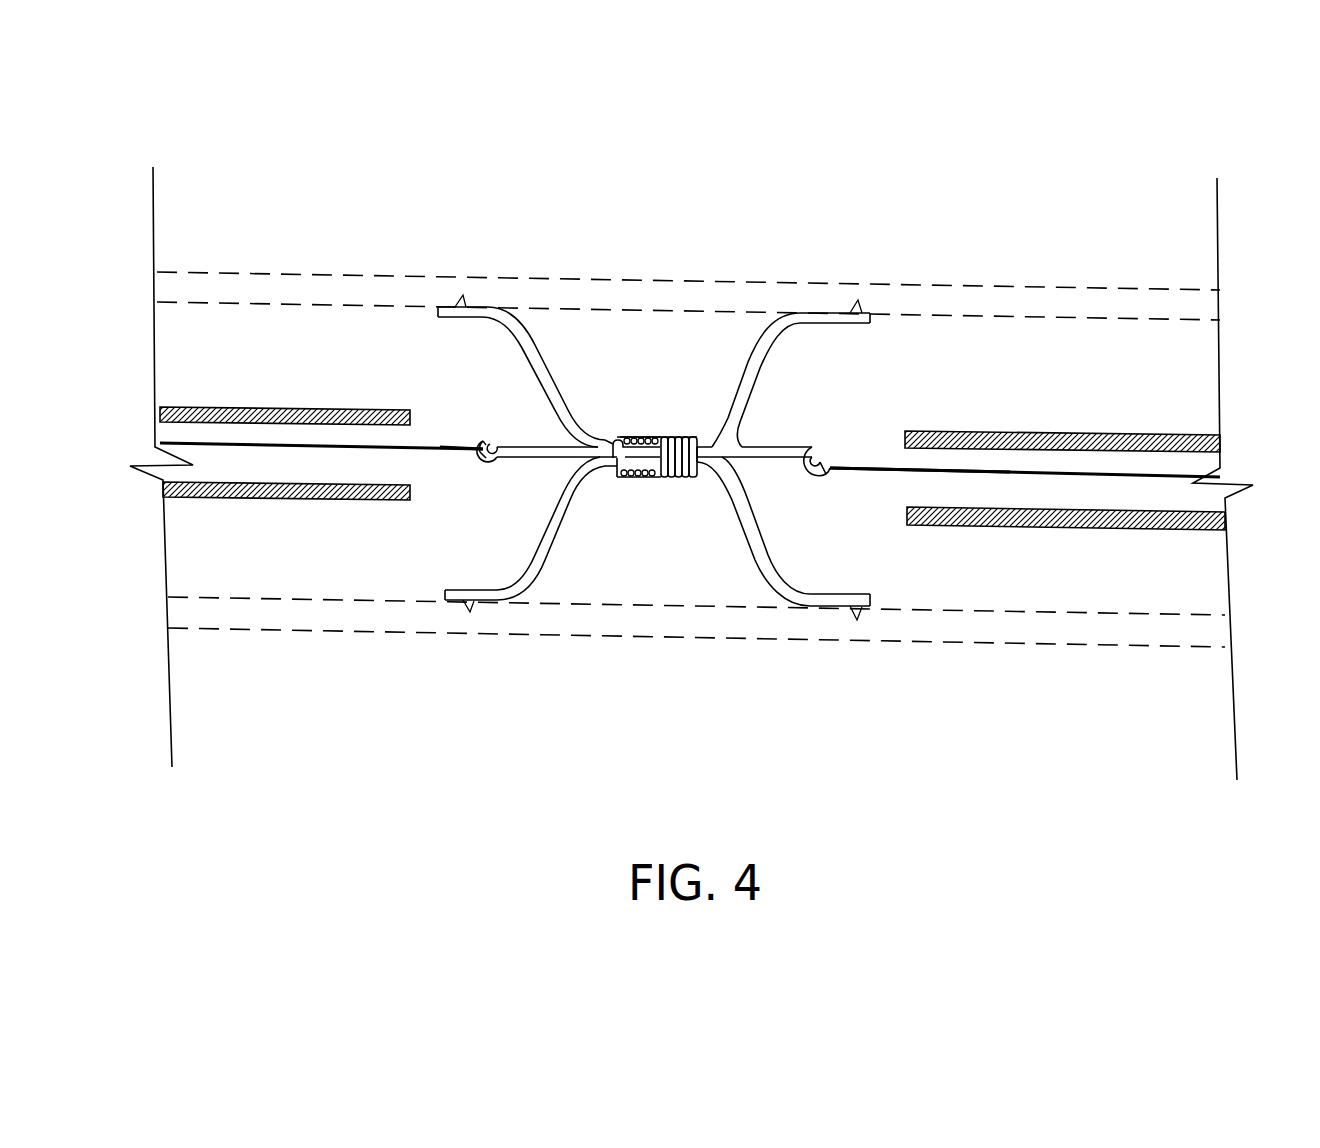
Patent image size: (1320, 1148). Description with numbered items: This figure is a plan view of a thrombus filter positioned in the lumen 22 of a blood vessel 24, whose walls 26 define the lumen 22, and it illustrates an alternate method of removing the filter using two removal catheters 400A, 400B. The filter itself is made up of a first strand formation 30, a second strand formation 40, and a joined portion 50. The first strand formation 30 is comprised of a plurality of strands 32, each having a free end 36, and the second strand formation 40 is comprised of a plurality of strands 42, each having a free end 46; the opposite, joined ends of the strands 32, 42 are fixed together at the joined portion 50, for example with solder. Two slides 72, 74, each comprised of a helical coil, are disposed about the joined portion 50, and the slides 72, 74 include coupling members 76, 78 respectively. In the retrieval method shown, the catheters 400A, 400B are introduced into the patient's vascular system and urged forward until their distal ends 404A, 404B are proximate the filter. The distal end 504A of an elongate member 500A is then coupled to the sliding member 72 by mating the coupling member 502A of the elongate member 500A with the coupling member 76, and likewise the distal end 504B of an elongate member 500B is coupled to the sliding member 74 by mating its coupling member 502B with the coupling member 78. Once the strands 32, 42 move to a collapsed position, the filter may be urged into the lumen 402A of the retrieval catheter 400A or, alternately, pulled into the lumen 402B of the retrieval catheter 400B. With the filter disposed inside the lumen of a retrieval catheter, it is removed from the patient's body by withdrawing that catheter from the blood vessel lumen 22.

The lumen 22 is at (1197, 600).
The blood vessel 24 is at (1155, 287).
The walls 26 is at (1188, 312).
The first strand formation 30 is at (752, 560).
The strands 32 is at (787, 340).
The free end 36 is at (858, 312).
The second strand formation 40 is at (572, 567).
The strands 42 is at (536, 348).
The free end 46 is at (470, 310).
The joined portion 50 is at (660, 522).
The slide 72 is at (673, 437).
The slide 74 is at (635, 437).
The coupling member 76 is at (813, 445).
The coupling member 78 is at (498, 428).
The removal catheter 400A is at (1110, 417).
The removal catheter 400B is at (197, 393).
The lumen 402A is at (1043, 460).
The lumen 402B is at (302, 432).
The distal end 404A is at (938, 420).
The distal end 404B is at (378, 393).
The elongate member 500A is at (1007, 470).
The elongate member 500B is at (460, 448).
The coupling member 502A is at (828, 478).
The coupling member 502B is at (488, 457).
The distal end 504A is at (850, 490).
The distal end 504B is at (474, 465).